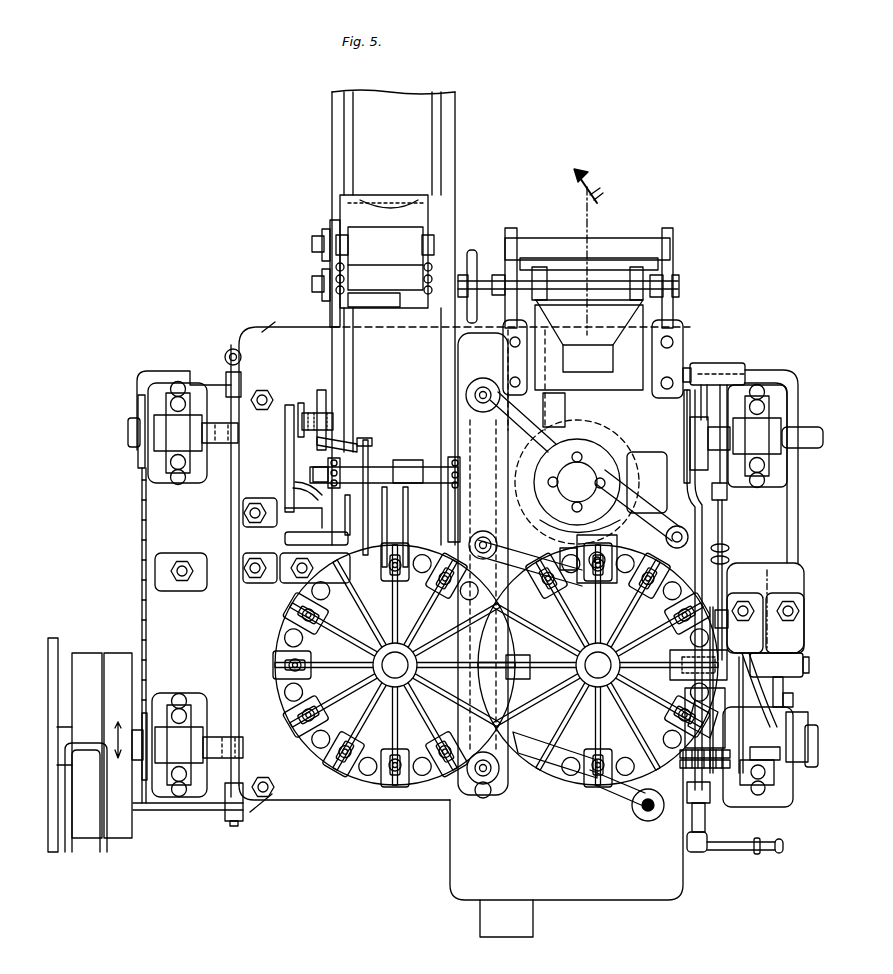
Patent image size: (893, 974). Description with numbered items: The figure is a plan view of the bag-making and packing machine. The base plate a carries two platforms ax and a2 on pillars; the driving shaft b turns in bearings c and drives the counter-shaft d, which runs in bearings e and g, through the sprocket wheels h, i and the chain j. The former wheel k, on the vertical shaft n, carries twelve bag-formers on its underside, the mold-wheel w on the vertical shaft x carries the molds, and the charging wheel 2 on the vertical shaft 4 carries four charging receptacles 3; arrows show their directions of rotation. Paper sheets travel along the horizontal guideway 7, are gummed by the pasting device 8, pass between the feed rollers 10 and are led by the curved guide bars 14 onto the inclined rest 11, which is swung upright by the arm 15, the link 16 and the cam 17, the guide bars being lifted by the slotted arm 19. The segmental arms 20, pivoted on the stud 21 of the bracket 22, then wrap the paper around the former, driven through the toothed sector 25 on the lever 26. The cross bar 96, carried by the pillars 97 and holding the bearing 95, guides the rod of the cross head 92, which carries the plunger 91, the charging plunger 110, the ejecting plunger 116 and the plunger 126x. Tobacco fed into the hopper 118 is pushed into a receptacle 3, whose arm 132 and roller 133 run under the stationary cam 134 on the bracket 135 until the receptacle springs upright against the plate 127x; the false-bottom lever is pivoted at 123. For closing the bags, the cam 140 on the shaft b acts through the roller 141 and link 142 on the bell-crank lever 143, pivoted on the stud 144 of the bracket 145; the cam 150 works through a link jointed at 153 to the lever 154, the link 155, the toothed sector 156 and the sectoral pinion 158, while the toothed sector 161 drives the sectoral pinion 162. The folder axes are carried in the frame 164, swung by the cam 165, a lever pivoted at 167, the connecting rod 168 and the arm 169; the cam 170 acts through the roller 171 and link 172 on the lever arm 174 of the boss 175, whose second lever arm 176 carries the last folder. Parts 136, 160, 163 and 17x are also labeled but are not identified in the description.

The horizontal guideway 7 is at (393, 317).
The pasting or gumming device 8 is at (373, 261).
The base plate a is at (155, 550).
The platform ax is at (274, 568).
The platform a2 is at (742, 572).
The hopper 118 is at (570, 283).
The vertically acting plunger 126x is at (588, 358).
The cross bar 96 is at (468, 410).
The pillars 97 is at (483, 385).
The bearing 95 is at (480, 543).
The arm 132 is at (595, 422).
The plate 127x is at (582, 496).
The supporting bracket 135 is at (642, 500).
The slide block 136 is at (605, 558).
The charging receptacles 3 is at (579, 442).
The vertical shaft 4 is at (609, 467).
The stationary cam 134 is at (634, 427).
The friction roller 133 is at (584, 429).
The pivot 123 is at (526, 380).
The charging wheel 2 is at (664, 423).
The former wheel k is at (495, 665).
The vertical shaft n is at (355, 627).
The vertical shaft x is at (556, 625).
The mold-wheel w is at (555, 748).
The cross head 92 is at (530, 577).
The plunger 91 is at (530, 667).
The plunger 110 is at (590, 613).
The vertical plunger 116 is at (592, 786).
The stud 21 is at (406, 617).
The toothed sector 25 is at (348, 440).
The horizontal feed rollers 10 is at (406, 462).
The curved guide bars 14 is at (370, 470).
The lever 26 is at (352, 486).
The inclined rest 11 is at (400, 499).
The segmental arms 20 is at (391, 527).
The arm 15 is at (365, 527).
The arm 19 is at (316, 479).
The link 16 is at (285, 466).
The cam 17 is at (303, 518).
The bracket 22 is at (292, 573).
The chain j is at (140, 528).
The bearing g is at (193, 433).
The counter-shaft d is at (128, 428).
The sprocket wheel i is at (135, 458).
The bearings c is at (457, 745).
The sprocket wheel h is at (94, 752).
The driving shaft b is at (48, 736).
The pivot 167 is at (742, 373).
The bearing e is at (757, 436).
The rod 160 is at (727, 434).
The cam 165 is at (730, 456).
The frame 164 is at (706, 595).
The cam 170 is at (684, 400).
The link 172 is at (701, 590).
The connecting rod 168 is at (718, 514).
The lever arm 176 is at (715, 560).
The friction roller 171 is at (652, 605).
The lever arm 174 is at (685, 645).
The arm 169 is at (728, 616).
The boss 175 is at (698, 665).
The sectoral pinion 162 is at (700, 772).
The toothed sector 161 is at (718, 689).
The roller 163 is at (740, 715).
The bell-crank lever 143 is at (806, 690).
The bracket 145 is at (780, 653).
The pin joint 153 is at (776, 665).
The stud 144 is at (821, 663).
The lever 154 is at (772, 730).
The friction roller 141 is at (807, 732).
The link 142 is at (764, 746).
The cam 140 is at (793, 783).
The link 155 is at (745, 785).
The toothed sector 156 is at (700, 807).
The cam 150 is at (716, 836).
The sectoral pinion 158 is at (634, 802).
The arm 17x is at (622, 799).